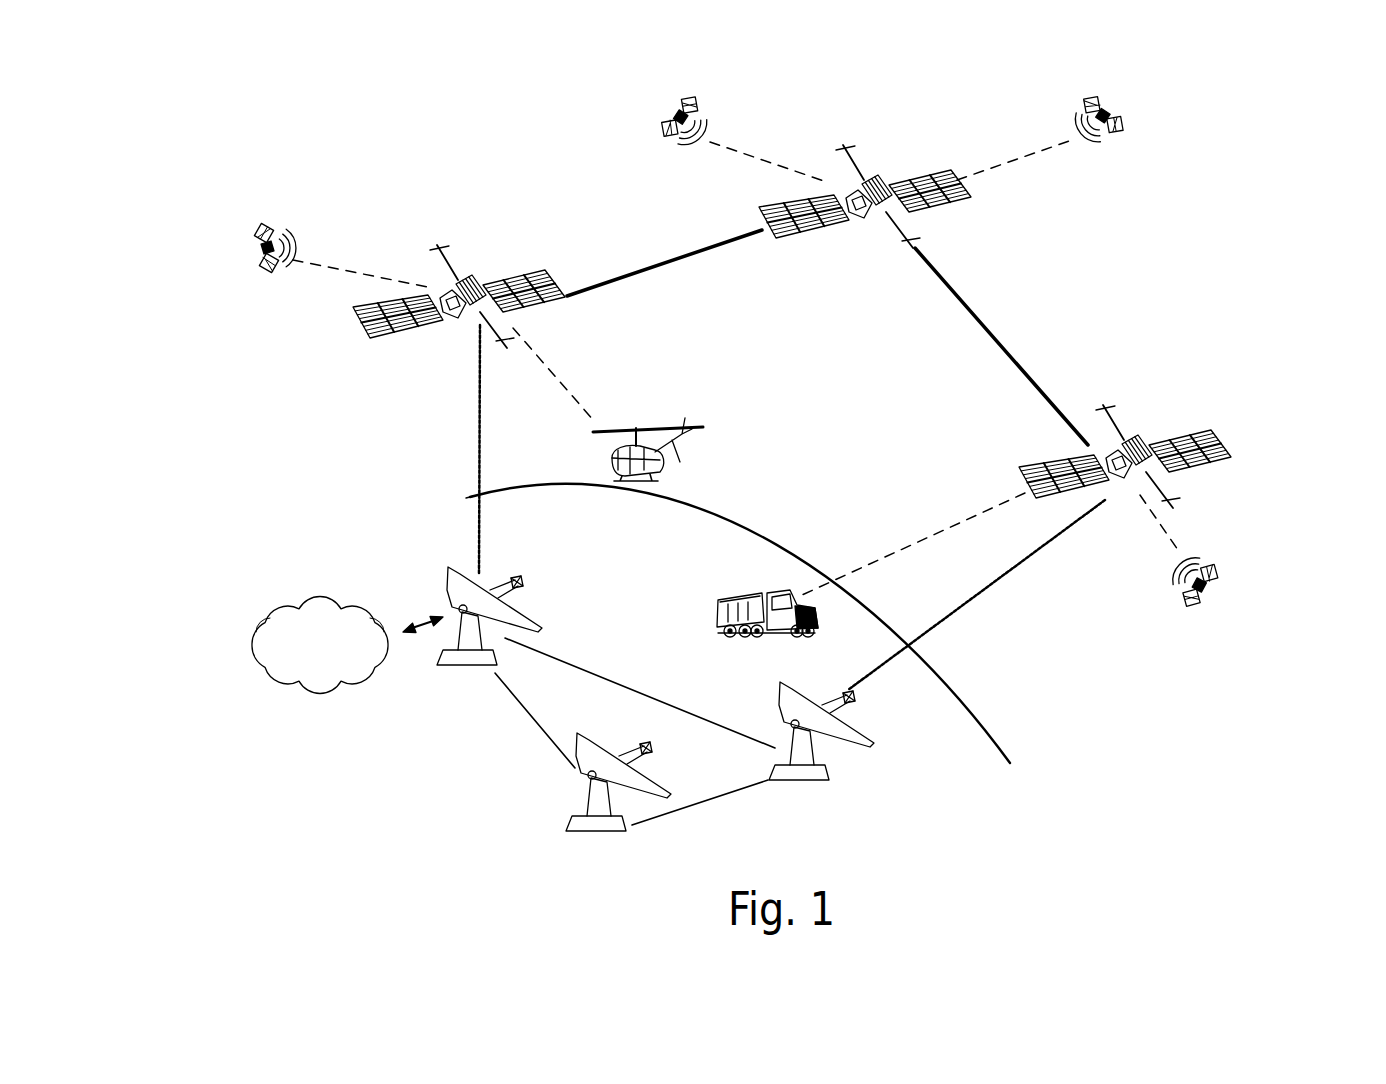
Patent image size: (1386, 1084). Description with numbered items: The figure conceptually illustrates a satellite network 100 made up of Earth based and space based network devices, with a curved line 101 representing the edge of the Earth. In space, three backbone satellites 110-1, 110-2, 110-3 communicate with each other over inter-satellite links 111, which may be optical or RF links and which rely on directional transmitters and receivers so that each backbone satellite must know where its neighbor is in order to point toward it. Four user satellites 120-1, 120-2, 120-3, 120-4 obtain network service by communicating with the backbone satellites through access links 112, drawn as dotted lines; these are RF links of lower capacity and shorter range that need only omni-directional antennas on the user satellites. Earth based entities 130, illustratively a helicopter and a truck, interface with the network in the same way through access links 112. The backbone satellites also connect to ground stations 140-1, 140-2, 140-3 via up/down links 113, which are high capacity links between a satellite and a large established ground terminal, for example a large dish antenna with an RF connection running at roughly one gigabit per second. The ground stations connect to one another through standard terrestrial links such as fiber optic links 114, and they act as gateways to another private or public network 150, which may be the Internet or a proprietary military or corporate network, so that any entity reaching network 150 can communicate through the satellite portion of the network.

The satellite network 100 is at (252, 161).
The curved line 101 is at (1010, 745).
The backbone satellite 110-1 is at (356, 325).
The backbone satellite 110-2 is at (978, 200).
The backbone satellite 110-3 is at (1230, 447).
The inter-satellite links 111 is at (633, 260).
The access links 112 is at (346, 268).
The up/down links 113 is at (472, 403).
The fiber optic links 114 is at (607, 674).
The user satellite 120-1 is at (246, 255).
The user satellite 120-2 is at (658, 130).
The user satellite 120-3 is at (1124, 115).
The user satellite 120-4 is at (1226, 580).
The earth based entities 130 is at (689, 449).
The ground station 140-1 is at (530, 598).
The ground station 140-2 is at (572, 787).
The ground station 140-3 is at (858, 717).
The network 150 is at (308, 600).